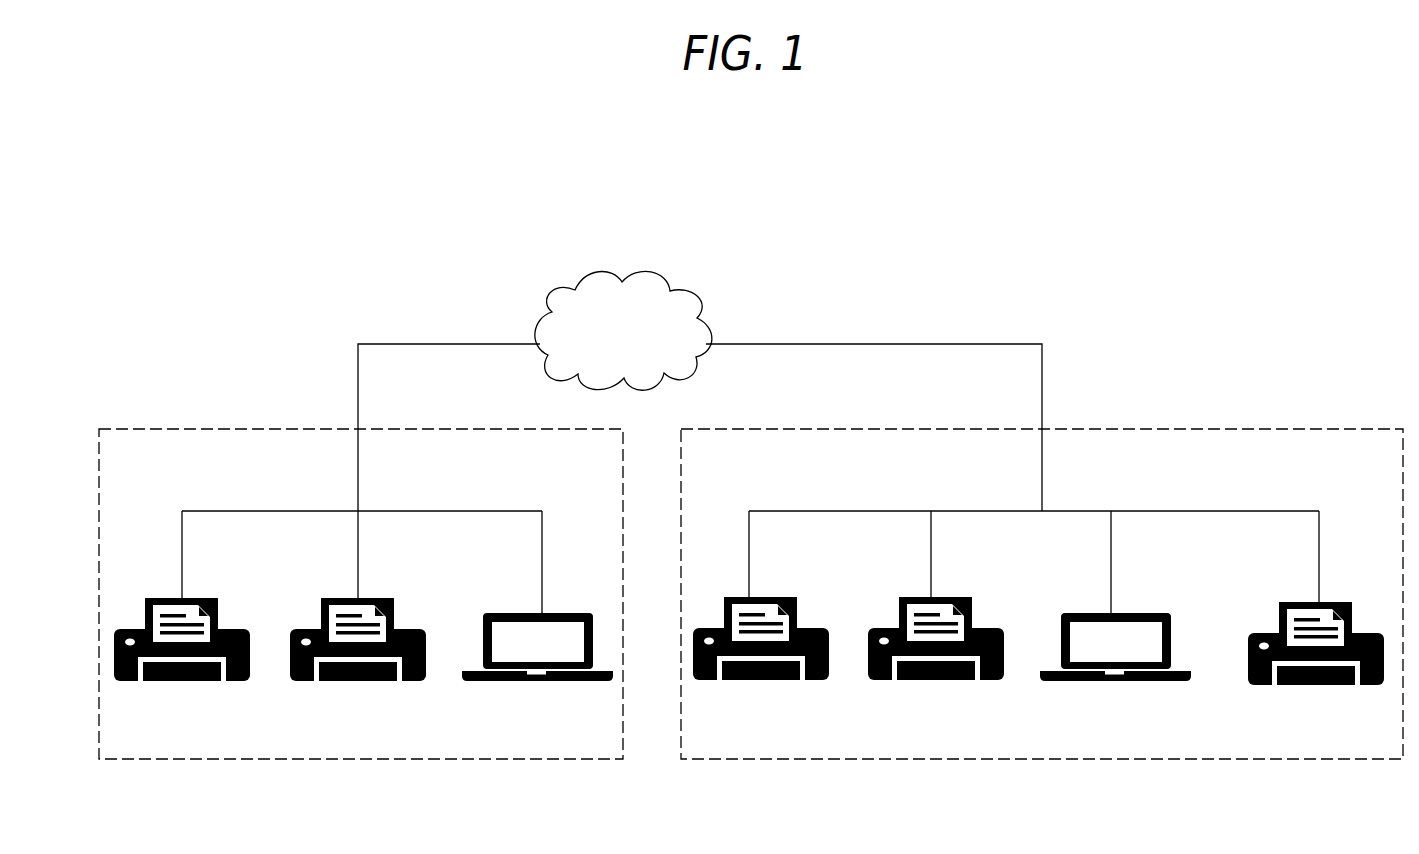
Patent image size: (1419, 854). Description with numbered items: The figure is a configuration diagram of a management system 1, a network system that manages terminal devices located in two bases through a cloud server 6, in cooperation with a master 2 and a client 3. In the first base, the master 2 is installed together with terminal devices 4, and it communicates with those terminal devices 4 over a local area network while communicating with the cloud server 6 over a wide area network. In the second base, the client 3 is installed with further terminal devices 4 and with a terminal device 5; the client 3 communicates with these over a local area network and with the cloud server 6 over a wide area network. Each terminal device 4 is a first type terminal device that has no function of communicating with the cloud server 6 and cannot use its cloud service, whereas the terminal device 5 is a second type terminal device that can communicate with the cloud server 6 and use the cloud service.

The management system 1 is at (291, 262).
The master 2 is at (562, 612).
The client 3 is at (1138, 612).
The terminal device 4 is at (208, 607).
The terminal device 5 is at (1341, 609).
The cloud server 6 is at (700, 296).